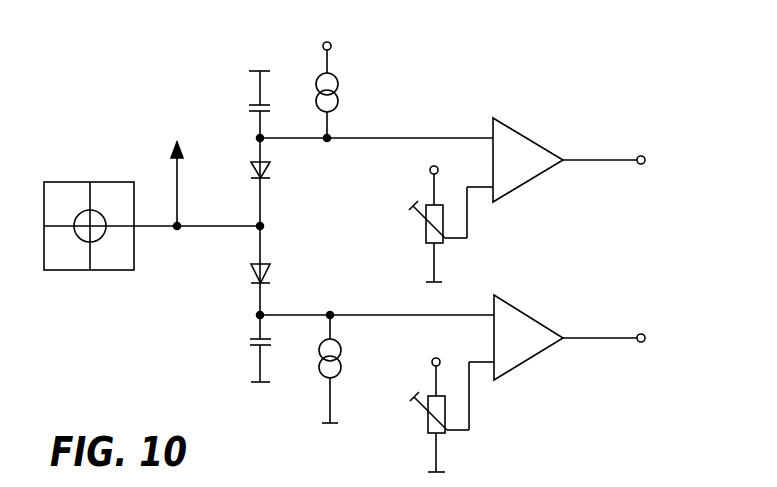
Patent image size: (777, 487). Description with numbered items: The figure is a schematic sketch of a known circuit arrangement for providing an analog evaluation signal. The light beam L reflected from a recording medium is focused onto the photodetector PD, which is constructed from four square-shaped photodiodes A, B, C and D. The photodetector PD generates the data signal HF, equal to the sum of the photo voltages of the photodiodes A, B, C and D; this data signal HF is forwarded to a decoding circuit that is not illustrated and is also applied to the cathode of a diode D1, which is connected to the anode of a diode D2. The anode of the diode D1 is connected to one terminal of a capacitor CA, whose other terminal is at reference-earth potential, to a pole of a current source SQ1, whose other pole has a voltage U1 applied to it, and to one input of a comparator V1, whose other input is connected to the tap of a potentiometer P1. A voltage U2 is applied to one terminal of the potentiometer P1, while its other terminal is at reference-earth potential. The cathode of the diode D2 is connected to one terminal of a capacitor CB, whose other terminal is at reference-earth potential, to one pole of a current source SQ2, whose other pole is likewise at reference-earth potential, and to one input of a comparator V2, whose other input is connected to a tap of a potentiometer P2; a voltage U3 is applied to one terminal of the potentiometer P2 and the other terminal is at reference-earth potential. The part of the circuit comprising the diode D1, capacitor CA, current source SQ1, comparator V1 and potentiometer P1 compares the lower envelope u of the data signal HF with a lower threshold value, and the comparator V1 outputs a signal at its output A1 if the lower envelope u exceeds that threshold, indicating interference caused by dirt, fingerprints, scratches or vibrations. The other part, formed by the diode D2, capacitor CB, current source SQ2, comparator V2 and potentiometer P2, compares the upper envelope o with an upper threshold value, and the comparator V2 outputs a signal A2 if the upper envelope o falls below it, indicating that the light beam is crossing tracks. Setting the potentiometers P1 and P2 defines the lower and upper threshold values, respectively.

The photodetector PD is at (90, 270).
The photodiode A is at (62, 200).
The photodiode B is at (112, 200).
The photodiode C is at (62, 255).
The photodiode D is at (112, 255).
The light spot L is at (84, 210).
The data signal HF is at (199, 186).
The diode D1 is at (280, 182).
The diode D2 is at (280, 270).
The capacitor CA is at (239, 106).
The capacitor CB is at (240, 347).
The current source SQ1 is at (323, 96).
The current source SQ2 is at (324, 368).
The voltage U1 is at (327, 33).
The voltage U2 is at (431, 156).
The voltage U3 is at (433, 347).
The lower envelope u is at (410, 124).
The upper envelope o is at (412, 301).
The comparator V1 is at (528, 154).
The comparator V2 is at (528, 332).
The output A1 is at (609, 143).
The output signal A2 is at (609, 322).
The potentiometer P1 is at (451, 228).
The potentiometer P2 is at (452, 417).